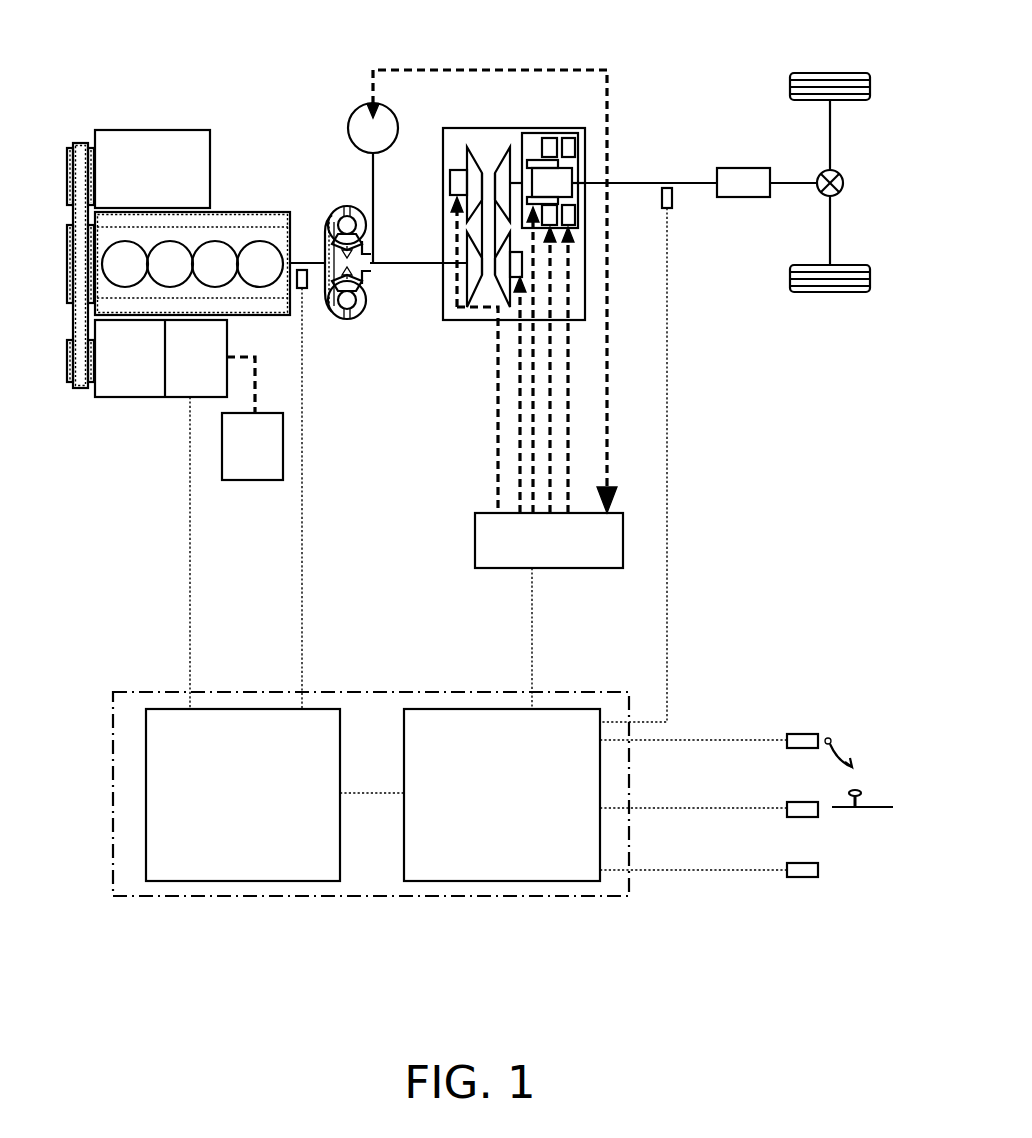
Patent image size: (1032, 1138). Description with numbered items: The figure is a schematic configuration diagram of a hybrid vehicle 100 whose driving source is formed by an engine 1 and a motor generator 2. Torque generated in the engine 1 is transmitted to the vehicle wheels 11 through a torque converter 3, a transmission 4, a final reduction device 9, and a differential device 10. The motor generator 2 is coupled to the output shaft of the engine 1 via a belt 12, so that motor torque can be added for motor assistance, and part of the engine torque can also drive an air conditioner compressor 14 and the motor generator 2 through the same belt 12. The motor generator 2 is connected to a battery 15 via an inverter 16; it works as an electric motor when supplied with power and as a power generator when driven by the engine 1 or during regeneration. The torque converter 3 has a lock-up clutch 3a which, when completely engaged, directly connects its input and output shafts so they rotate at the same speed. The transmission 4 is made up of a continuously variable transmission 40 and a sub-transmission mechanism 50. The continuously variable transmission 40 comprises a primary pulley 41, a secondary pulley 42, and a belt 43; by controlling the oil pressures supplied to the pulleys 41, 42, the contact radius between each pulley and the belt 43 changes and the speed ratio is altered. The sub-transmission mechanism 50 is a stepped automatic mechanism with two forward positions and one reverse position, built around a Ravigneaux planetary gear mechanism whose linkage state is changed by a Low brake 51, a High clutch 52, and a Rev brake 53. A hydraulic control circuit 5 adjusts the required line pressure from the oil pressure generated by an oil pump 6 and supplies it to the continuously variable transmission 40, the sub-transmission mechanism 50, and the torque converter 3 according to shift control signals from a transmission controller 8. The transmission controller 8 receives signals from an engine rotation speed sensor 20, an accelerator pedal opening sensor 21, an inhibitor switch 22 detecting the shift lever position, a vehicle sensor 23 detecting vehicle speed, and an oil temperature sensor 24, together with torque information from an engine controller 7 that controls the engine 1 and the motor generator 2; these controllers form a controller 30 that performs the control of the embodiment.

The engine 1 is at (234, 224).
The motor generator 2 is at (115, 398).
The torque converter 3 is at (332, 232).
The lock-up clutch 3a is at (333, 258).
The transmission 4 is at (533, 298).
The hydraulic control circuit 5 is at (585, 568).
The oil pump 6 is at (348, 130).
The engine controller 7 is at (160, 882).
The transmission controller 8 is at (588, 882).
The final reduction device 9 is at (725, 168).
The differential device 10 is at (843, 178).
The vehicle wheels 11 is at (846, 73).
The belt 12 is at (78, 390).
The air conditioner compressor 14 is at (160, 136).
The battery 15 is at (262, 414).
The inverter 16 is at (176, 398).
The engine rotation speed sensor 20 is at (305, 289).
The accelerator pedal opening sensor 21 is at (797, 734).
The inhibitor switch 22 is at (797, 802).
The vehicle sensor 23 is at (660, 208).
The oil temperature sensor 24 is at (797, 877).
The controller 30 is at (371, 784).
The continuously variable transmission 40 is at (470, 229).
The primary pulley 41 is at (483, 295).
The secondary pulley 42 is at (468, 152).
The belt 43 is at (490, 175).
The sub-transmission mechanism 50 is at (588, 155).
The Low brake 51 is at (547, 138).
The High clutch 52 is at (558, 165).
The Rev brake 53 is at (575, 145).
The vehicle 100 is at (247, 929).